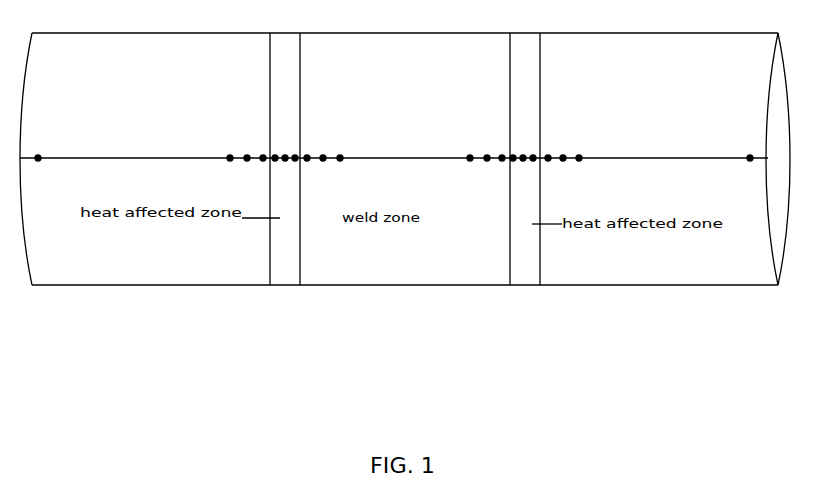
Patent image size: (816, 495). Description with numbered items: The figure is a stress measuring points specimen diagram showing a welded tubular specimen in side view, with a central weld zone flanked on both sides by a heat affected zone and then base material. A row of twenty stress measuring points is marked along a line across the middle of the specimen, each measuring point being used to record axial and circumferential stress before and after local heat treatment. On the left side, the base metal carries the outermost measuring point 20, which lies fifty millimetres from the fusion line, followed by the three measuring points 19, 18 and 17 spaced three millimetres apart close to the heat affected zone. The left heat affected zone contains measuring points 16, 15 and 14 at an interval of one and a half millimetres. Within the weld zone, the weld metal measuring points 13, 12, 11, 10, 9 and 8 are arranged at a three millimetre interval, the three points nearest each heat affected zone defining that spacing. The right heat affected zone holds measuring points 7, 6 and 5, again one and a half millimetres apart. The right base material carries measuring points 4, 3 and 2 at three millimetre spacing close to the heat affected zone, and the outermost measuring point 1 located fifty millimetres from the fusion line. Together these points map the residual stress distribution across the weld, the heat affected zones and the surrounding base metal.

The stress measuring point 20 is at (38, 147).
The stress measuring point 19 is at (230, 147).
The stress measuring point 18 is at (247, 147).
The stress measuring point 17 is at (263, 147).
The stress measuring point 16 is at (275, 147).
The stress measuring point 15 is at (285, 147).
The stress measuring point 14 is at (295, 147).
The stress measuring point 13 is at (307, 147).
The stress measuring point 12 is at (323, 147).
The stress measuring point 11 is at (340, 147).
The stress measuring point 10 is at (470, 147).
The stress measuring point 9 is at (487, 147).
The stress measuring point 8 is at (502, 147).
The stress measuring point 7 is at (513, 147).
The stress measuring point 6 is at (523, 147).
The stress measuring point 5 is at (533, 147).
The stress measuring point 4 is at (548, 147).
The stress measuring point 3 is at (563, 147).
The stress measuring point 2 is at (579, 147).
The stress measuring point 1 is at (750, 147).